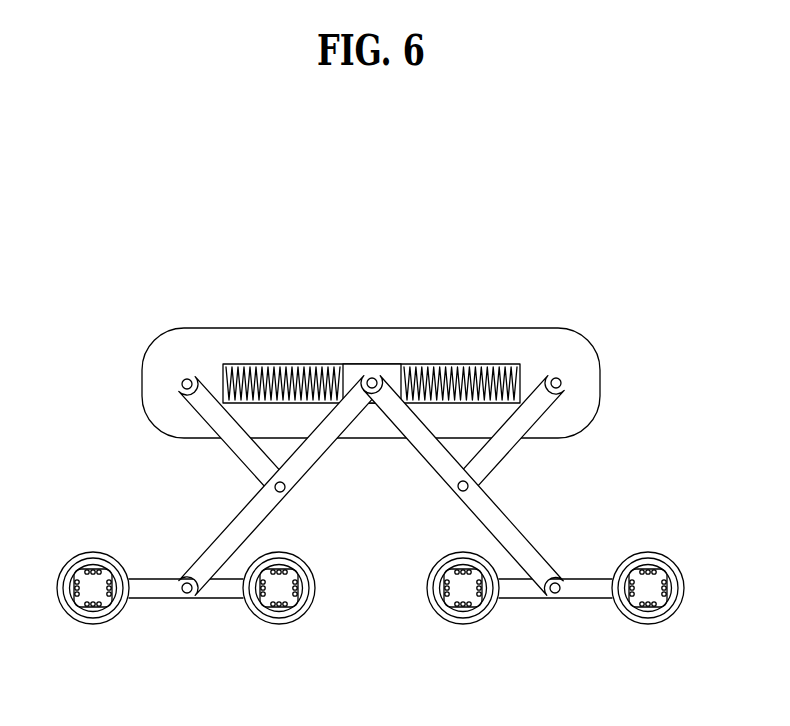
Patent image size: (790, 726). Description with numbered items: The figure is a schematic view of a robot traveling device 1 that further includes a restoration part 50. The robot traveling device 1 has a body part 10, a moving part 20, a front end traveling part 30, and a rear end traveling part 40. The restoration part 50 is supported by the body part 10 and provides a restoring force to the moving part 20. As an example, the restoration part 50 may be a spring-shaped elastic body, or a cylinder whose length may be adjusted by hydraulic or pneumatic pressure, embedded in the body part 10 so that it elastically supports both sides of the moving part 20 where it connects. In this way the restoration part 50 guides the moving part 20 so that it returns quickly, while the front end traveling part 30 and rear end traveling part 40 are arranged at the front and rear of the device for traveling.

The robot traveling device 1 is at (654, 182).
The body part 10 is at (594, 347).
The moving part 20 is at (385, 372).
The front end traveling part 30 is at (178, 606).
The rear end traveling part 40 is at (565, 606).
The restoration part 50 is at (457, 368).